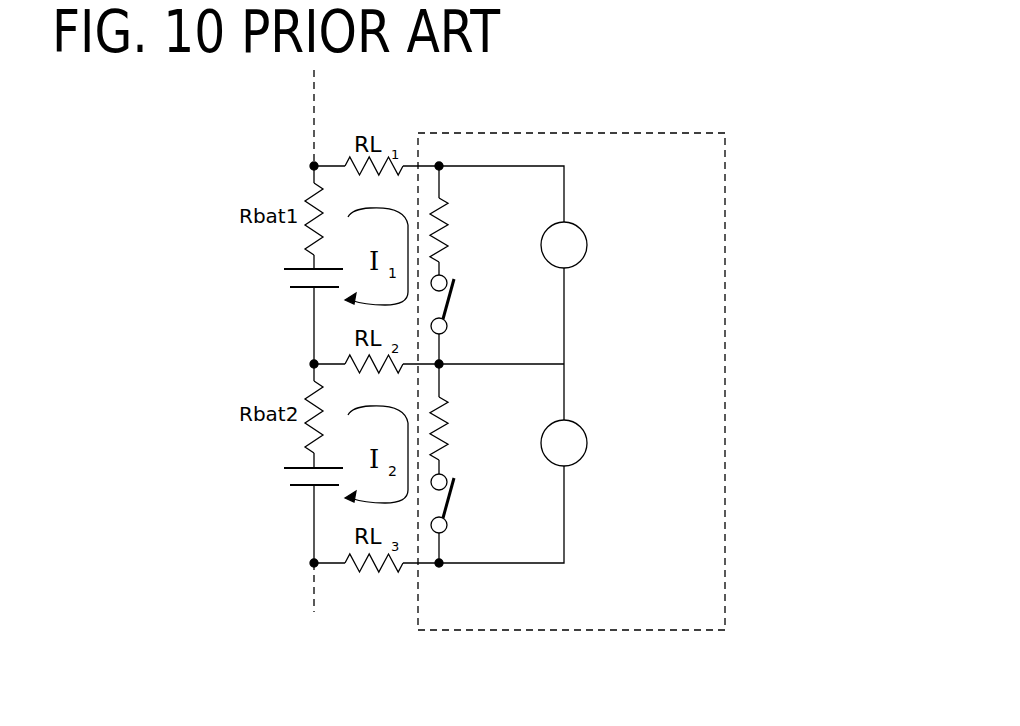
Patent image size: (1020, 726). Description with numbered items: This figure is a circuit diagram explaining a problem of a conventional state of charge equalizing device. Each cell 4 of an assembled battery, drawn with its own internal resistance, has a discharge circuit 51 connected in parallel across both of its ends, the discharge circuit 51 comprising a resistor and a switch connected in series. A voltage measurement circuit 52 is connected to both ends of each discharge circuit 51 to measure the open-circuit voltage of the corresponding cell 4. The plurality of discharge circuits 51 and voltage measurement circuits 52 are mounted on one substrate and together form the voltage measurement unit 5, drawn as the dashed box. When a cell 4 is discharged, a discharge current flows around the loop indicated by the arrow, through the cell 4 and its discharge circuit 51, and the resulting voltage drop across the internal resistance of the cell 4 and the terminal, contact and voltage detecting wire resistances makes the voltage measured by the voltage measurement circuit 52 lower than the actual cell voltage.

The cell 4 is at (295, 266).
The voltage measurement unit 5 is at (603, 355).
The discharge circuit 51 is at (466, 265).
The voltage measurement circuit 52 is at (578, 226).